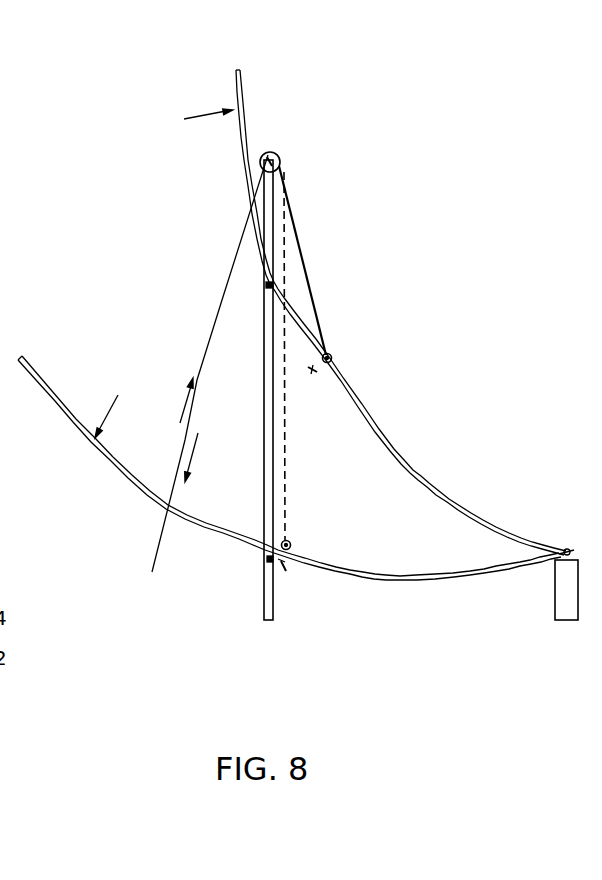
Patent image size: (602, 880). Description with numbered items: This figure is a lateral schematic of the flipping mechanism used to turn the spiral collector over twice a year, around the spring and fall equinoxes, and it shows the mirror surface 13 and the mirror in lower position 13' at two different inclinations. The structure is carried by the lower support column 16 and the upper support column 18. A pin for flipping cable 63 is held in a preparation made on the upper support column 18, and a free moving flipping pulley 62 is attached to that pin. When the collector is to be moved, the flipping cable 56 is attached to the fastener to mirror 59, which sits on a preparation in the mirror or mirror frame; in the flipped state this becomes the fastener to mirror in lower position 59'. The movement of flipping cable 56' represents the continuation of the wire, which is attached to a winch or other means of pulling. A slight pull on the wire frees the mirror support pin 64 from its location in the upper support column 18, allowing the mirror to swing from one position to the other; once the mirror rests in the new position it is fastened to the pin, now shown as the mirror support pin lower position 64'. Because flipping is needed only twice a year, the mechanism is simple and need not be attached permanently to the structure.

The mirror surface 13 is at (473, 405).
The mirror in lower position 13' is at (503, 515).
The lower support column 16 is at (567, 577).
The upper support column 18 is at (268, 217).
The flipping cable 56 is at (401, 312).
The movement of flipping cable 56' is at (289, 447).
The fastener to mirror 59 is at (390, 270).
The fastener to mirror in lower position 59' is at (360, 397).
The flipping pulley 62 is at (280, 163).
The pin for flipping cable 63 is at (276, 155).
The mirror support pin 64 is at (197, 363).
The mirror support pin lower position 64' is at (188, 551).